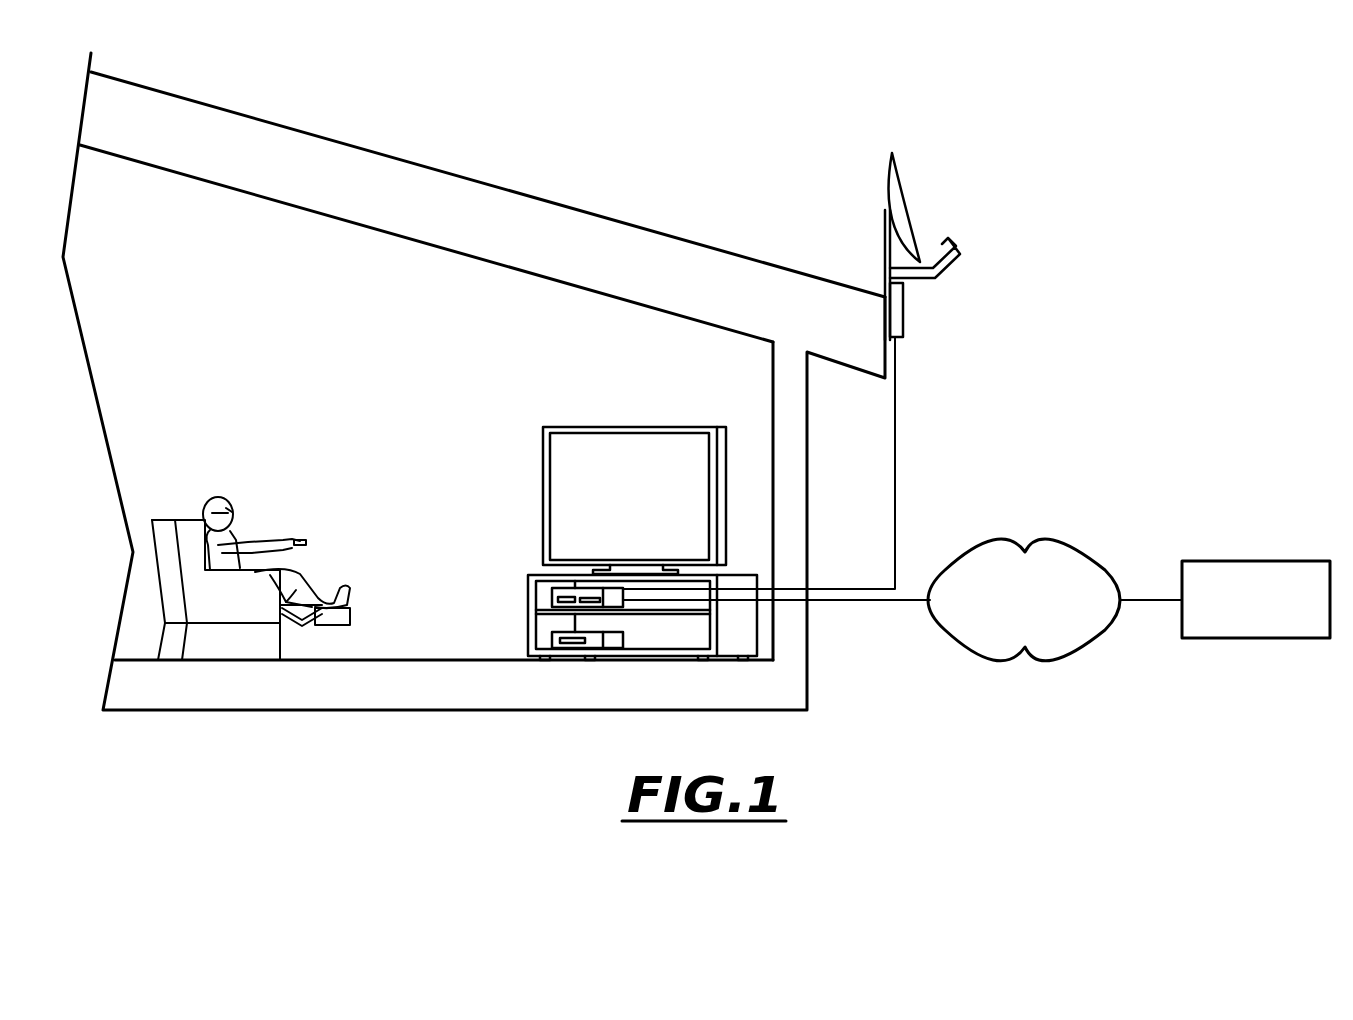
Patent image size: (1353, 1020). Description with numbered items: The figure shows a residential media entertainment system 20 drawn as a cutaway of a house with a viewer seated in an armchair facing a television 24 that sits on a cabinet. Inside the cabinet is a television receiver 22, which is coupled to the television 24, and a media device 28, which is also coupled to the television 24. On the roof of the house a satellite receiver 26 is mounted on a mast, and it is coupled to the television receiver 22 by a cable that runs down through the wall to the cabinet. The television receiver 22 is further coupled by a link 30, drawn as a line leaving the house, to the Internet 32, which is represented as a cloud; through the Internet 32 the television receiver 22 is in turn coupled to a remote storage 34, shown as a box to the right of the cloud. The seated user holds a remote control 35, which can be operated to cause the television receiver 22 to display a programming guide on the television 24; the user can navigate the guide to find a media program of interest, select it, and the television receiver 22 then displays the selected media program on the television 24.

The media entertainment system 20 is at (364, 358).
The television receiver 22 is at (552, 598).
The television 24 is at (592, 427).
The satellite receiver 26 is at (905, 190).
The media device 28 is at (552, 640).
The link 30 is at (862, 601).
The Internet 32 is at (1063, 541).
The remote storage 34 is at (1281, 561).
The remote control 35 is at (300, 542).